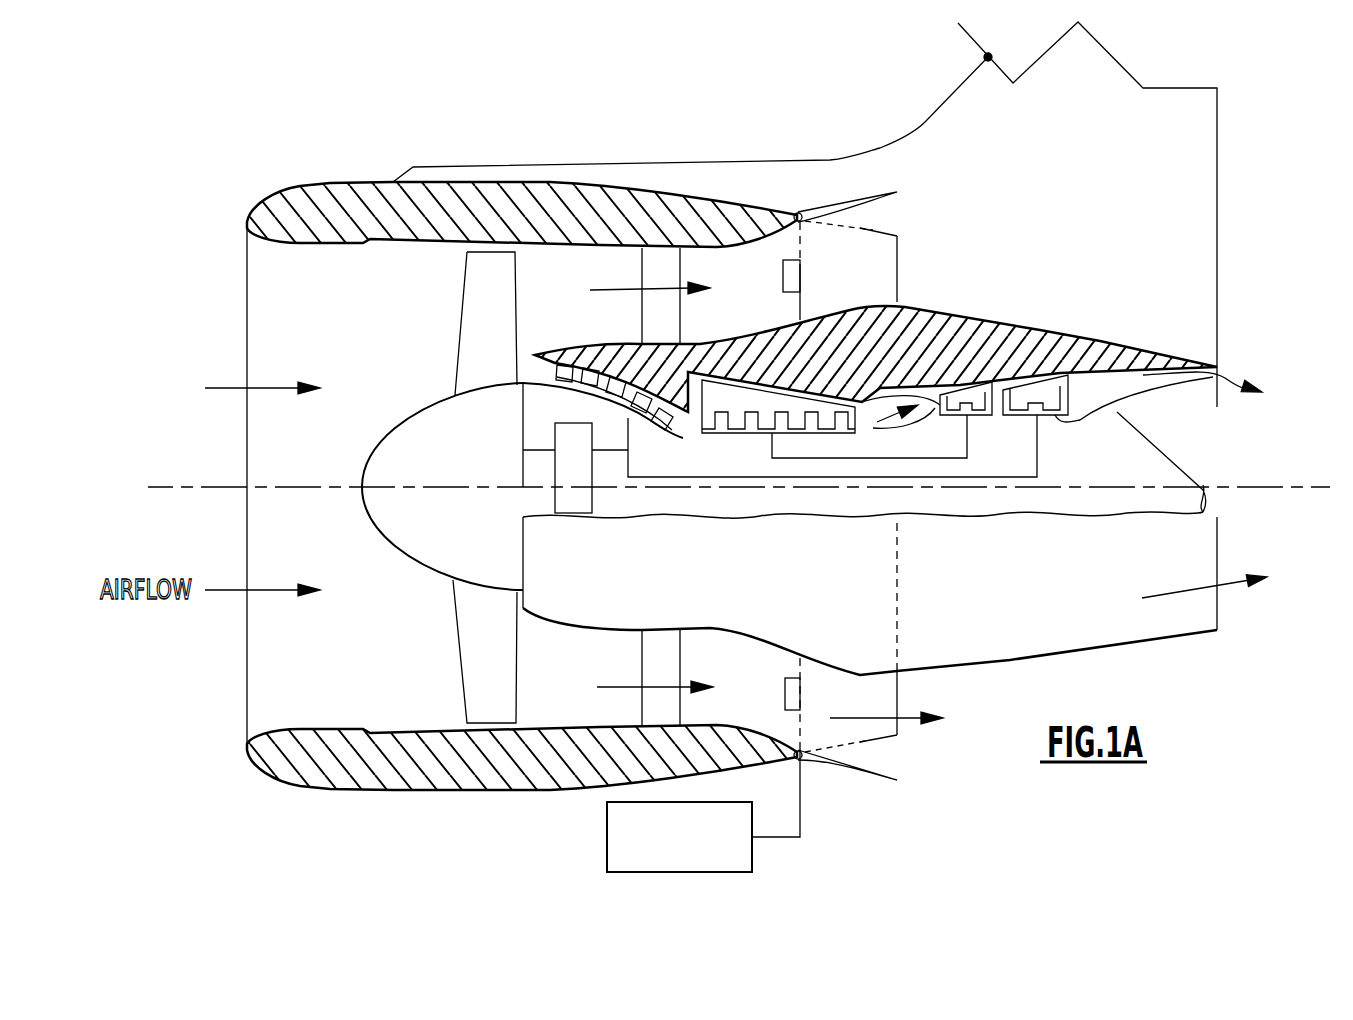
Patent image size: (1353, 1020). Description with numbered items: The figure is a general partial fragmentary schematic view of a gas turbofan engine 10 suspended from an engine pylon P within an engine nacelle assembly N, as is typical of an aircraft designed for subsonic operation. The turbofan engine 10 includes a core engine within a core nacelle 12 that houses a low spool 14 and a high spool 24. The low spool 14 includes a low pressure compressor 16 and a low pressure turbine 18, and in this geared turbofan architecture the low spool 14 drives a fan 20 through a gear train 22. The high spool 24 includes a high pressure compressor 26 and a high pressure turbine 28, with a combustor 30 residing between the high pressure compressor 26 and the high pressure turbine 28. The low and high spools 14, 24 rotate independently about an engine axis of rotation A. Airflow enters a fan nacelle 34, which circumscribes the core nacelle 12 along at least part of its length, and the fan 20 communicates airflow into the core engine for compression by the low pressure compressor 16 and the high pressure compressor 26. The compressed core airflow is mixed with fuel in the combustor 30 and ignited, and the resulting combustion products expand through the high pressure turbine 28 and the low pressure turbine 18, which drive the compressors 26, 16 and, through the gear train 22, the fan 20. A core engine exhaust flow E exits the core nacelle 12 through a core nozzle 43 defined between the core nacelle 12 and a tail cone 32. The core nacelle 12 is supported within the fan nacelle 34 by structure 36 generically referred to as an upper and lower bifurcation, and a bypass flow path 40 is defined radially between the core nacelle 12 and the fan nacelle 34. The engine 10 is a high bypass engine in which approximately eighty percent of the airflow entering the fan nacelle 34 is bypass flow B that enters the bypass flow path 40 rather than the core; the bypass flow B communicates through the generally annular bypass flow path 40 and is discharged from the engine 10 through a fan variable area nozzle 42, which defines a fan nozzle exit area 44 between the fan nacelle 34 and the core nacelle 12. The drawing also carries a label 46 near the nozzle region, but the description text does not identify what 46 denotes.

The gas turbofan engine 10 is at (295, 126).
The core nacelle 12 is at (1054, 330).
The low spool 14 is at (838, 490).
The low pressure compressor 16 is at (658, 420).
The low pressure turbine 18 is at (1060, 418).
The fan 20 is at (450, 652).
The gear train 22 is at (572, 495).
The high spool 24 is at (808, 470).
The high pressure compressor 26 is at (748, 420).
The high pressure turbine 28 is at (985, 418).
The combustor 30 is at (910, 430).
The tail cone 32 is at (1157, 458).
The fan nacelle 34 is at (548, 185).
The structure 36 is at (675, 328).
The bypass flow path 40 is at (568, 284).
The fan variable area nozzle 42 is at (850, 228).
The core nozzle 43 is at (1232, 366).
The fan nozzle exit area 44 is at (897, 272).
The deployed vane position 46 is at (812, 170).
The engine axis of rotation A is at (1283, 488).
The bypass flow B is at (625, 687).
The core engine exhaust flow E is at (1230, 588).
The engine nacelle assembly N is at (638, 175).
The engine pylon P is at (1200, 182).